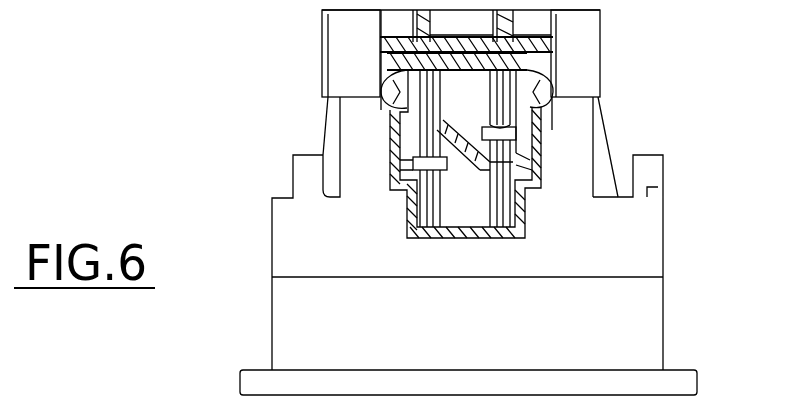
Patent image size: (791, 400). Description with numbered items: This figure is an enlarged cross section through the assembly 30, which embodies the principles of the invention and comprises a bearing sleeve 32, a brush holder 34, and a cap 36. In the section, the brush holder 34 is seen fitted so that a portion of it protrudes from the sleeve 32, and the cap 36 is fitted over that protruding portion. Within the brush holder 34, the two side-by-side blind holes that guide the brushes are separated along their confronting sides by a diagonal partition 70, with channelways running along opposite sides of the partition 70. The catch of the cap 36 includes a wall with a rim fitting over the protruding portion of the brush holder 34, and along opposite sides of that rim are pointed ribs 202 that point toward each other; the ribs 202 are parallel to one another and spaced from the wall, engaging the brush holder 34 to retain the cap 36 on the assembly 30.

The assembly 30 is at (183, 119).
The bearing sleeve 32 is at (665, 302).
The brush holder 34 is at (407, 95).
The cap 36 is at (602, 30).
The pointed ribs 202 is at (393, 102).
The diagonal partition 70 is at (478, 135).